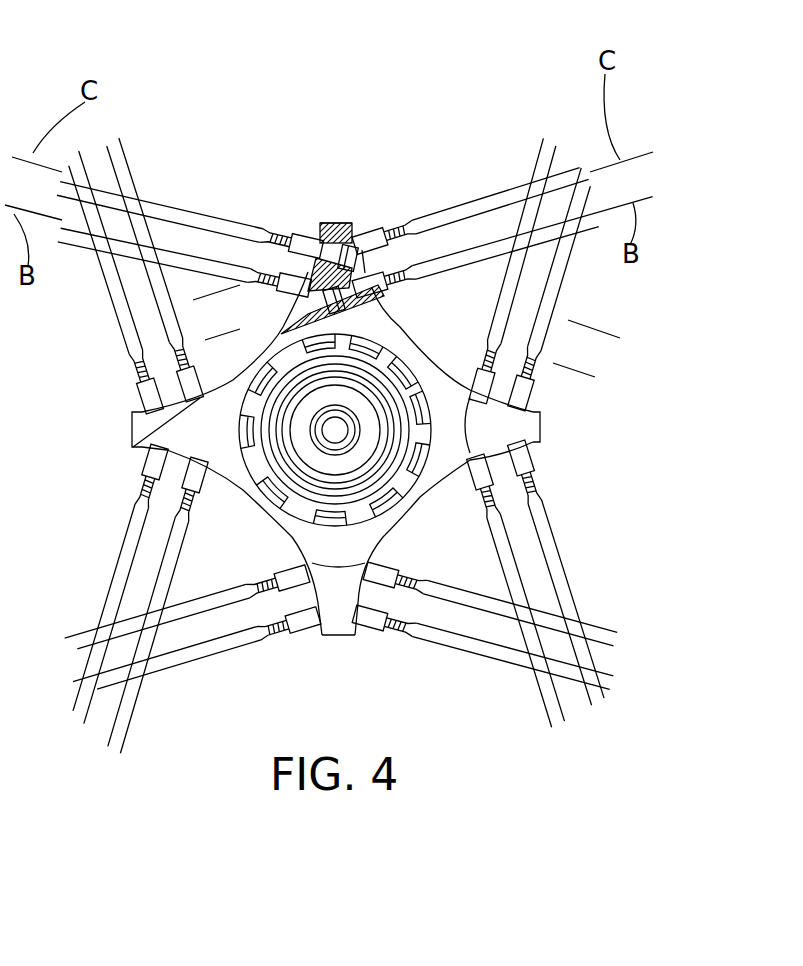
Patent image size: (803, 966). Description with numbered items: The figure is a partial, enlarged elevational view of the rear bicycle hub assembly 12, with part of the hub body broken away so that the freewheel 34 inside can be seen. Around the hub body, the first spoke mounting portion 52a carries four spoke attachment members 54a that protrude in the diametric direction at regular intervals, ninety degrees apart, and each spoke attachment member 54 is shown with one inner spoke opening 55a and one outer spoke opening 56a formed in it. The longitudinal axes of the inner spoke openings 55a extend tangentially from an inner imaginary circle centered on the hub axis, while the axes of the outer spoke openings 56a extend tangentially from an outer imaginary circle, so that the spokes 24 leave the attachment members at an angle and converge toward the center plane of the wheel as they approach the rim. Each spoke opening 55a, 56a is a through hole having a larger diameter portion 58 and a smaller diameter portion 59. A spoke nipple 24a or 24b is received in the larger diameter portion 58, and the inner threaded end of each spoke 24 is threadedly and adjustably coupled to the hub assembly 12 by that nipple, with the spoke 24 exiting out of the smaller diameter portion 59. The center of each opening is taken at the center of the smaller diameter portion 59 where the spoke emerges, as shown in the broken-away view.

The rear bicycle hub assembly 12 is at (428, 90).
The spokes 24 is at (196, 244).
The spoke nipple 24a is at (308, 232).
The spoke nipple 24b is at (137, 398).
The freewheel 34 is at (436, 380).
The first spoke mounting portion 52a is at (283, 545).
The spoke attachment arm 54 is at (542, 423).
The spoke attachment members 54a is at (132, 428).
The inner spoke openings 55a is at (280, 327).
The outer spoke openings 56a is at (340, 222).
The larger diameter portion 58 is at (372, 247).
The smaller diameter portion 59 is at (290, 246).